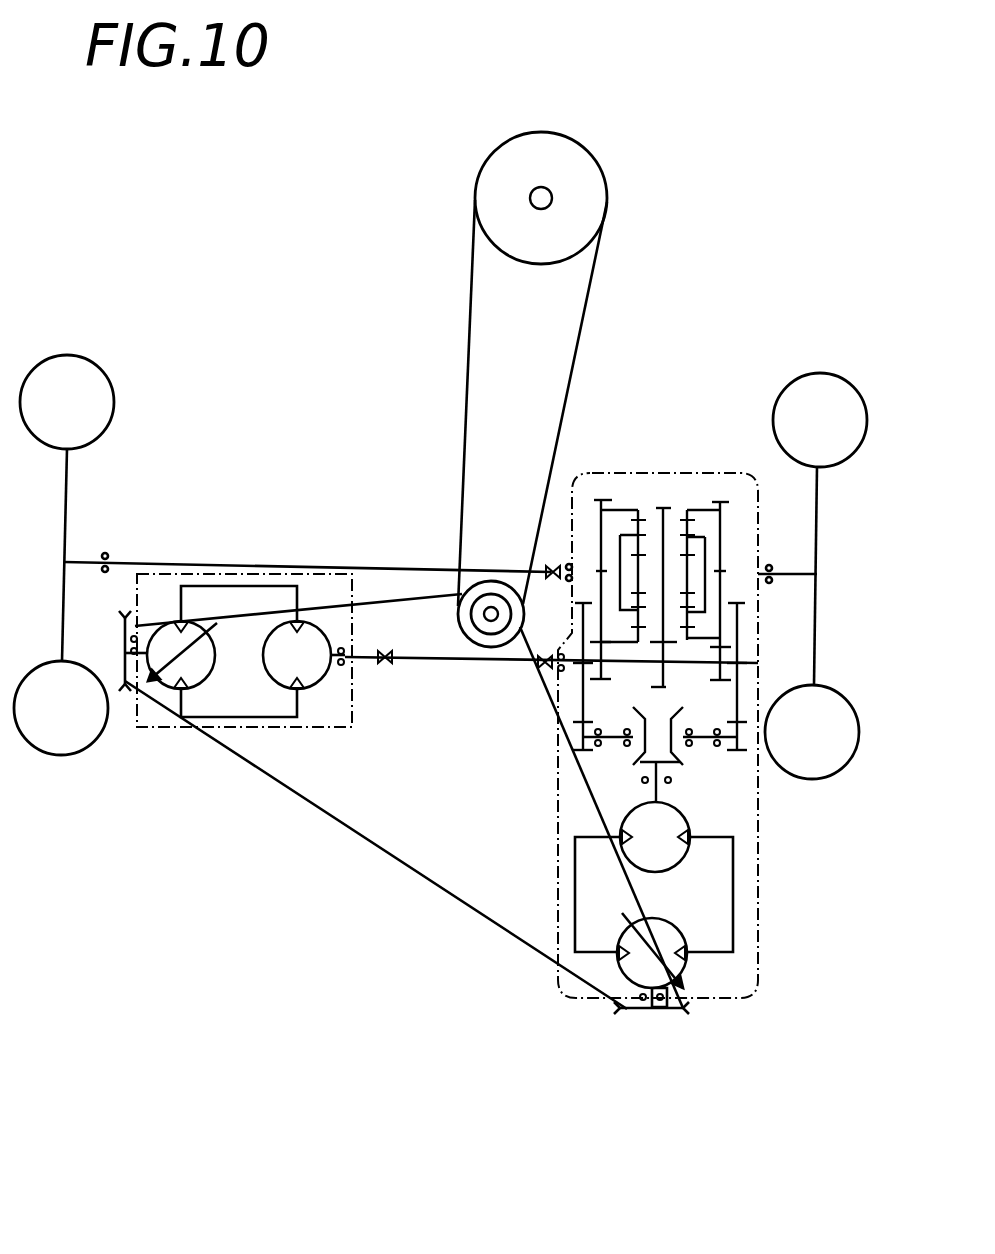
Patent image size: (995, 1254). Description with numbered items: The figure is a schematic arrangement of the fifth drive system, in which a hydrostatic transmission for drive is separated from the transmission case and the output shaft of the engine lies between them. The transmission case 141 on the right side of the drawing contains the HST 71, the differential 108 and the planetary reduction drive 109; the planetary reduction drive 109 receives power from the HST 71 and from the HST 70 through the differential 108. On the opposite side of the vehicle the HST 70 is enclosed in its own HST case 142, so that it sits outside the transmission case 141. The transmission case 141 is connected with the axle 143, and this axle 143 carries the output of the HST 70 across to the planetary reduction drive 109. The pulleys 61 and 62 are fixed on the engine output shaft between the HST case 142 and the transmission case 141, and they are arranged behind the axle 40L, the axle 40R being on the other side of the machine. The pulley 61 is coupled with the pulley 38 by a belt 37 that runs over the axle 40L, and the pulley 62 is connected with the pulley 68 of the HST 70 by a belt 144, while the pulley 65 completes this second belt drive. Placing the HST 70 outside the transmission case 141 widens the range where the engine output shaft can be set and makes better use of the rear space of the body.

The belt 37 is at (467, 345).
The pulley 38 is at (497, 197).
The axle 40L is at (372, 567).
The right axle 40R is at (790, 572).
The pulley 61 is at (498, 584).
The pulley 62 is at (495, 628).
The belt 65 is at (660, 1010).
The pulley 68 is at (122, 625).
The HST 70 is at (233, 597).
The HST 71 is at (698, 883).
The differential 108 is at (702, 772).
The planetary reduction drive 109 is at (650, 490).
The transmission case 141 is at (733, 998).
The HST case 142 is at (138, 727).
The axle 143 is at (430, 665).
The belt 144 is at (348, 826).